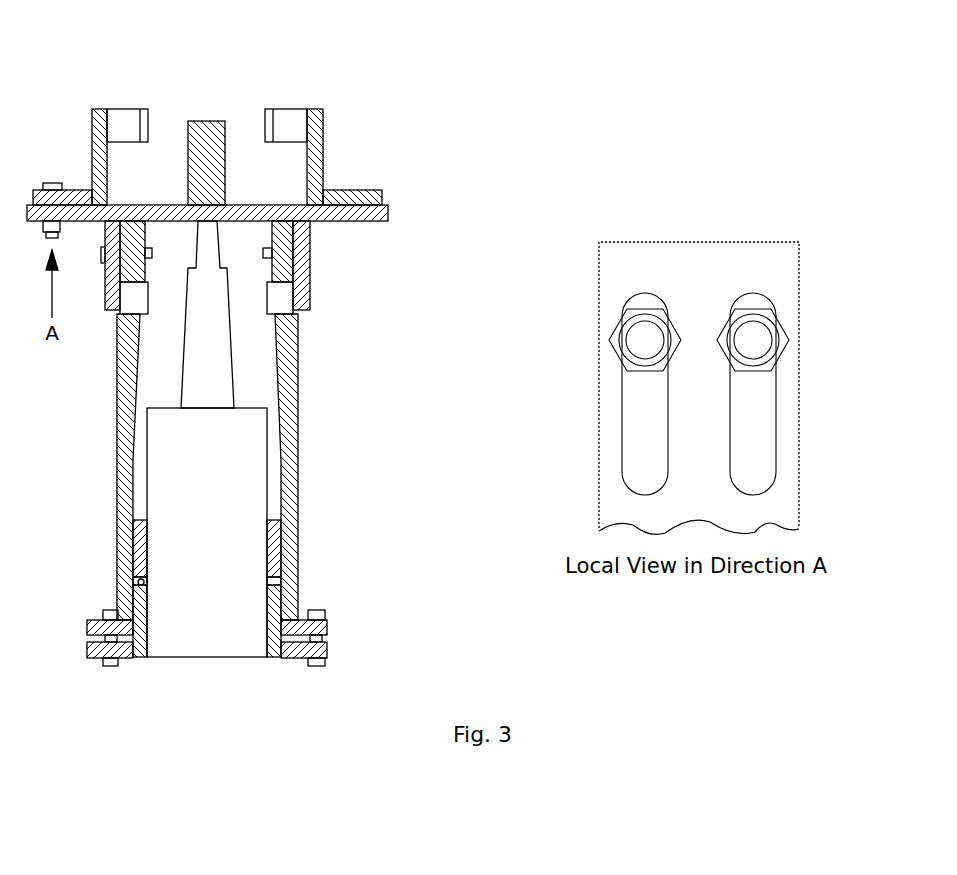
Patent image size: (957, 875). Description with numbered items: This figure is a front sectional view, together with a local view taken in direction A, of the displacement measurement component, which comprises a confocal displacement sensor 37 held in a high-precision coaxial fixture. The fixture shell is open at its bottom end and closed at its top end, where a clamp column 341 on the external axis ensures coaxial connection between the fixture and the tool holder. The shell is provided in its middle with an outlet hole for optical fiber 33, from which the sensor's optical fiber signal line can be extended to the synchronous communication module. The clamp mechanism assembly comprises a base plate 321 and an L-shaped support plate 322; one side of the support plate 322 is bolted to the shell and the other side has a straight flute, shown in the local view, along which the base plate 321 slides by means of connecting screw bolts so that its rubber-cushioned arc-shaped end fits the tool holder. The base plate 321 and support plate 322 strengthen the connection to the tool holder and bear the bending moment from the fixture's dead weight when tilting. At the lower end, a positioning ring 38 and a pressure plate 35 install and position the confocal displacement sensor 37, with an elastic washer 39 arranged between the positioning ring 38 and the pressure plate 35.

The base plate 321 is at (322, 174).
The clamp column 341 is at (209, 127).
The support plate 322 is at (308, 252).
The outlet hole for optical fiber 33 is at (290, 306).
The confocal displacement sensor 37 is at (236, 446).
The positioning ring 38 is at (268, 547).
The elastic washer 39 is at (272, 582).
The pressure plate 35 is at (283, 649).